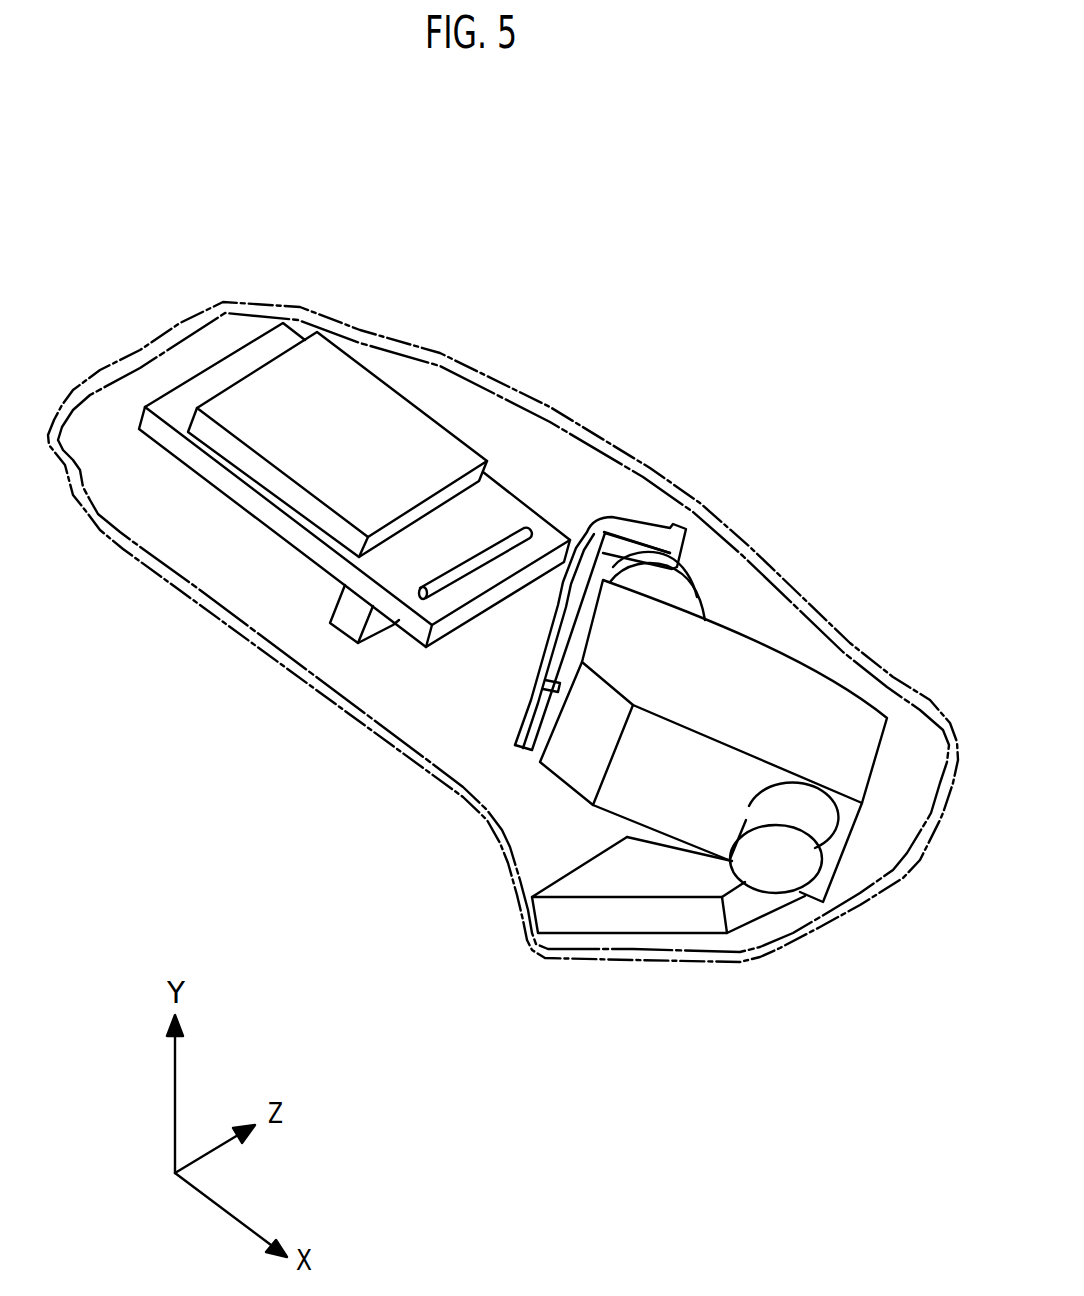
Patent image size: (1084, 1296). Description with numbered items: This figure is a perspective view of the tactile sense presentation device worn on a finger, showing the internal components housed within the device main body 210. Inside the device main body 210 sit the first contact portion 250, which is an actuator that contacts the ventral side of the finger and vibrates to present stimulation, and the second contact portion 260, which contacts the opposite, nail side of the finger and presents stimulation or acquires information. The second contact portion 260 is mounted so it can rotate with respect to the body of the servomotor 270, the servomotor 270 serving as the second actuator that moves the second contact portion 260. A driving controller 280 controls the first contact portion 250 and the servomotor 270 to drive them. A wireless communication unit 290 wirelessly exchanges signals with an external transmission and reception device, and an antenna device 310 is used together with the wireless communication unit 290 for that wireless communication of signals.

The device main body 210 is at (84, 514).
The first contact portion 250 is at (596, 916).
The second contact portion 260 is at (636, 528).
The servomotor 270 is at (750, 660).
The driving controller 280 is at (413, 573).
The wireless communication unit 290 is at (380, 432).
The antenna device 310 is at (504, 548).